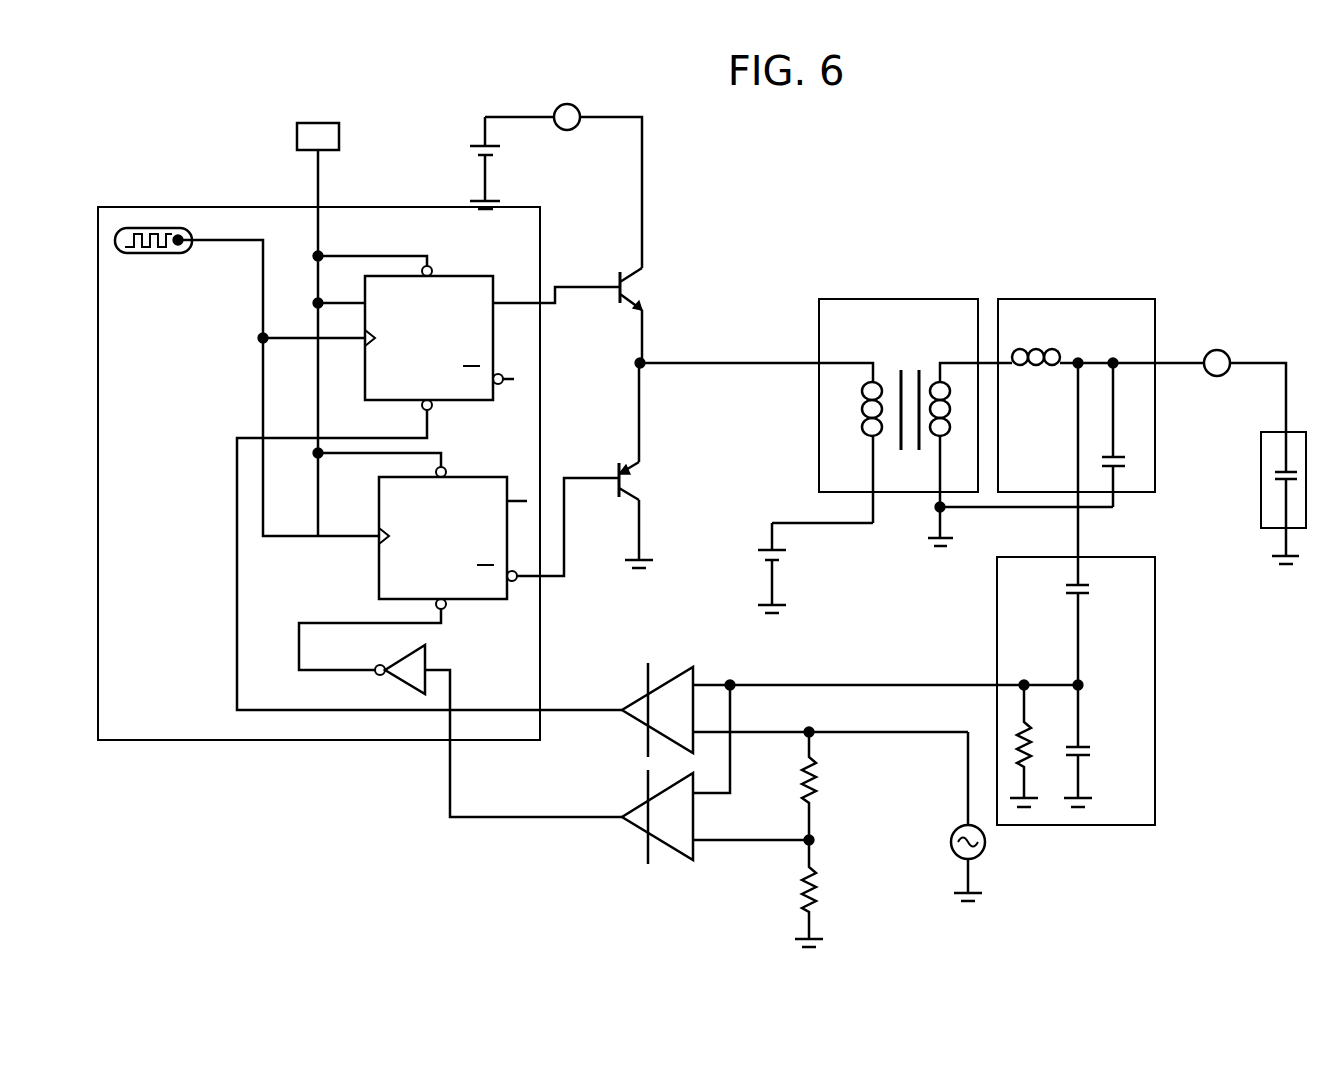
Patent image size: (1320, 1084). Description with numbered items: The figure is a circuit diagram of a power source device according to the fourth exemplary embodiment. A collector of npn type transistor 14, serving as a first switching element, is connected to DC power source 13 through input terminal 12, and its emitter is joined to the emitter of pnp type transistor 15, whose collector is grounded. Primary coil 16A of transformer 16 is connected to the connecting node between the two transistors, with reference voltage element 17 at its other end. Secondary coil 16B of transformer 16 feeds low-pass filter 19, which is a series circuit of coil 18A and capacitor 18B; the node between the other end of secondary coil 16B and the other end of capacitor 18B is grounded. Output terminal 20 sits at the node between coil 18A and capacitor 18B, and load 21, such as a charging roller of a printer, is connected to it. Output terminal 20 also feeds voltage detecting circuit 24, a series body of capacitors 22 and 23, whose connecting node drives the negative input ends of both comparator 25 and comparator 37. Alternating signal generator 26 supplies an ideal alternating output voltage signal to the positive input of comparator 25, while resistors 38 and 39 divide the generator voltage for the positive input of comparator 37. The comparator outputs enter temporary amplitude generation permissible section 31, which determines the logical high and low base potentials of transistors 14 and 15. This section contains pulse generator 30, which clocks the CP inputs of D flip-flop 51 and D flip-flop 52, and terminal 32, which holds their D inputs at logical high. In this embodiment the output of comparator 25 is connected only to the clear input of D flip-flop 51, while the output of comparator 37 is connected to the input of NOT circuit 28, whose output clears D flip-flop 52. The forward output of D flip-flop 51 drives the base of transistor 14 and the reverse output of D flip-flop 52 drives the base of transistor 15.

The input terminal 12 is at (567, 131).
The DC power source 13 is at (465, 152).
The npn type transistor 14 is at (646, 287).
The pnp type transistor 15 is at (642, 481).
The transformer 16 is at (876, 392).
The primary coil 16A is at (860, 384).
The secondary coil 16B is at (934, 380).
The reference voltage element 17 is at (756, 558).
The coil 18A is at (1038, 346).
The capacitor 18B is at (1135, 458).
The low-pass filter 19 is at (1114, 373).
The output terminal 20 is at (1222, 350).
The load 21 is at (1259, 497).
The capacitor 22 is at (1098, 590).
The capacitor 23 is at (1100, 752).
The voltage detecting circuit 24 is at (970, 594).
The comparator 25 is at (637, 722).
The alternating signal generator 26 is at (985, 846).
The logical NOT circuit 28 is at (428, 667).
The pulse generator 30 is at (155, 262).
The temporary amplitude generation permissible section 31 is at (160, 206).
The terminal 32 is at (296, 135).
The comparator 37 is at (637, 828).
The resistor 38 is at (795, 777).
The resistor 39 is at (793, 882).
The D flip-flop 51 is at (462, 276).
The D flip-flop 52 is at (460, 477).